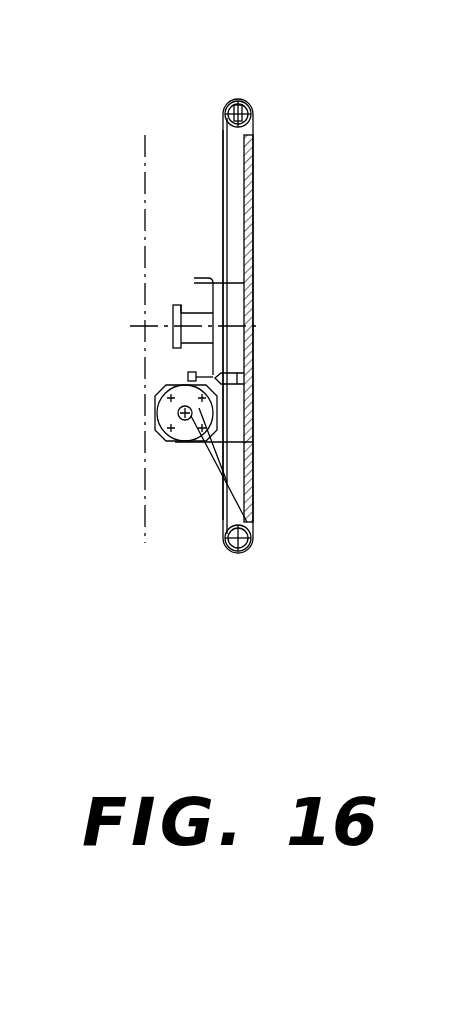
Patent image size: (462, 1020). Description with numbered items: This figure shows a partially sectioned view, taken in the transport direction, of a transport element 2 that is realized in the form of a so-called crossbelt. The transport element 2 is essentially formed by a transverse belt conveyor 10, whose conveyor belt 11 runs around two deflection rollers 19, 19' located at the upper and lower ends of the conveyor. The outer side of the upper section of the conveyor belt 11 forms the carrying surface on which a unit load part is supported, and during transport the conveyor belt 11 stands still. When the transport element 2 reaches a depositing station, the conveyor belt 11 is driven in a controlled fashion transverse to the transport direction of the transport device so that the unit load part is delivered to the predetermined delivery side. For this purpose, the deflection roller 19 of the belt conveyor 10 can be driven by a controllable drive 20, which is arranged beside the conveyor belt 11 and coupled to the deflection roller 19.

The transport element 2 is at (289, 323).
The belt conveyor 10 is at (246, 367).
The conveyor belt 11 is at (227, 188).
The deflection roller 19 is at (277, 559).
The deflection roller 19' is at (286, 90).
The controllable drive 20 is at (177, 447).